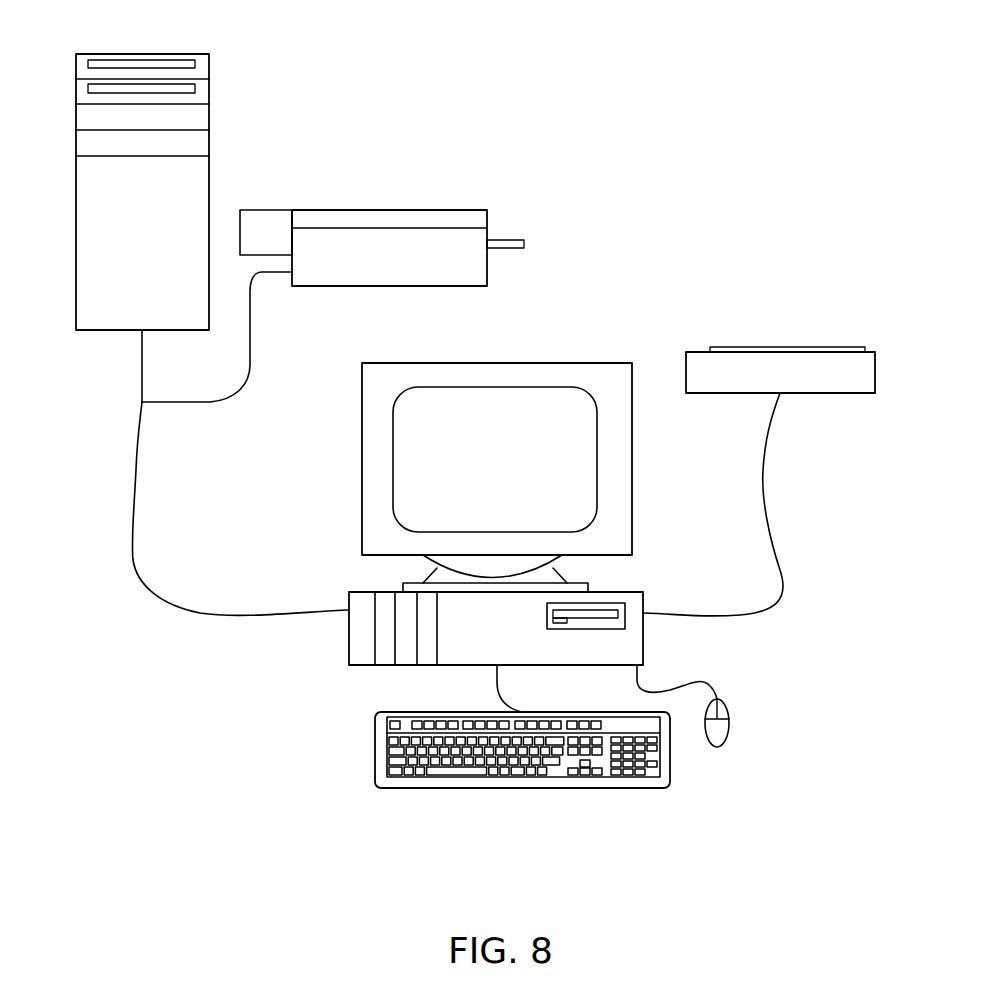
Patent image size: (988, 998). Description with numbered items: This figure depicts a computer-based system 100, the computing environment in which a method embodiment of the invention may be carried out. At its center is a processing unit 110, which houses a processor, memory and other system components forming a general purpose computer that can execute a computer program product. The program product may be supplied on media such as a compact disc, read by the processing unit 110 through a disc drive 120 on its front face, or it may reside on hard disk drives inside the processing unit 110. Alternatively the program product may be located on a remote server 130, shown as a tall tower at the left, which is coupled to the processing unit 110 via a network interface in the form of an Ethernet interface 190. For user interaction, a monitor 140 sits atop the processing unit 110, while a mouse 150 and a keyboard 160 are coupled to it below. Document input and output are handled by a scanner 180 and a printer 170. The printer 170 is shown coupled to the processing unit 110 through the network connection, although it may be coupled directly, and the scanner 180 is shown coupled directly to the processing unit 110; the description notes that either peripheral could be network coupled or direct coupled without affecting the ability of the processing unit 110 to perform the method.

The computer-based system 100 is at (630, 120).
The processing unit 110 is at (349, 650).
The disc drive 120 is at (626, 613).
The server 130 is at (209, 183).
The monitor 140 is at (580, 363).
The mouse 150 is at (729, 735).
The keyboard 160 is at (376, 752).
The printer 170 is at (438, 210).
The scanner 180 is at (811, 347).
The Ethernet interface 190 is at (137, 452).